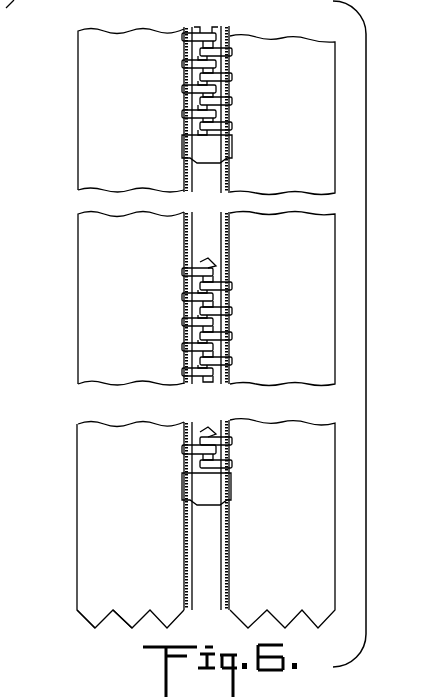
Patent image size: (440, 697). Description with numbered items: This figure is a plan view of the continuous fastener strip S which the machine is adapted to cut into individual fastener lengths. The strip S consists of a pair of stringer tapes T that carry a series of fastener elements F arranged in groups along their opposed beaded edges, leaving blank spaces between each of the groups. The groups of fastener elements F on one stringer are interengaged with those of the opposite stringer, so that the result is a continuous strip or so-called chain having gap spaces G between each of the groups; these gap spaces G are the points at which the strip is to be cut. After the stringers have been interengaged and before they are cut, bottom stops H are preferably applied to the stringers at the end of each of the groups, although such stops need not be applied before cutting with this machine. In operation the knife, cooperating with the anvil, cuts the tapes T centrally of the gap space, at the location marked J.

The stringer tapes T is at (87, 552).
The gap spaces G is at (205, 175).
The fastener elements F is at (183, 63).
The bottom stops H is at (218, 147).
The continuous fastener strip S is at (80, 621).
The cut location J is at (123, 623).